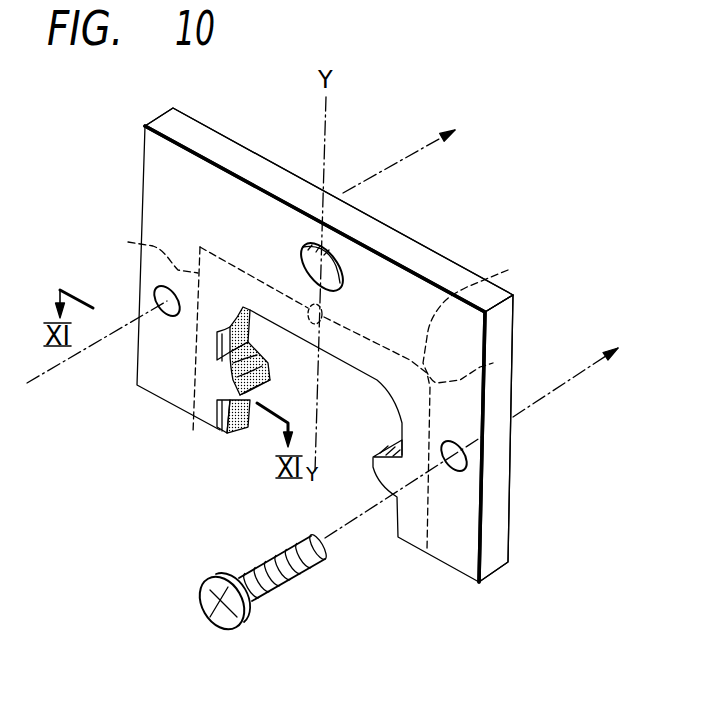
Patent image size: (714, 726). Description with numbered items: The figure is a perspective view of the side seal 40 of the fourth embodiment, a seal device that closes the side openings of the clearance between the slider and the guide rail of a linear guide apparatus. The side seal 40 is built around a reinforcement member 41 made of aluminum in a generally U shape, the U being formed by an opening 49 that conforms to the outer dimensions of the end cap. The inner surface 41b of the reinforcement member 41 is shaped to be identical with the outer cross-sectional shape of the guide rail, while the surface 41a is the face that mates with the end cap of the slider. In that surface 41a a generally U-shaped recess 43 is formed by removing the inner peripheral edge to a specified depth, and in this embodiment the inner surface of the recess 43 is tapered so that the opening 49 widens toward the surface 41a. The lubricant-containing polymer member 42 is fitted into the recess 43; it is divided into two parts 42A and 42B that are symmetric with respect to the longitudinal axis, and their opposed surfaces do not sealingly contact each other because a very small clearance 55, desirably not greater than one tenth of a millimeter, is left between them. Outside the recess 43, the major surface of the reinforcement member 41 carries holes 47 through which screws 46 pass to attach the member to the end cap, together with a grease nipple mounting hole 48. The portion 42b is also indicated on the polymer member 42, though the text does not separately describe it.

The side seal 40 is at (418, 222).
The reinforcement member 41 is at (428, 292).
The surface 41a is at (220, 132).
The inner surface 41b is at (188, 391).
The lubricant-containing polymer member 42 is at (231, 446).
The part 42A is at (140, 271).
The part 42B is at (487, 318).
The tab bend portion 42b is at (233, 380).
The recess 43 is at (493, 363).
The screw 46 is at (240, 620).
The hole 47 is at (470, 460).
The grease nipple mounting hole 48 is at (293, 233).
The opening 49 is at (345, 454).
The clearance 55 is at (323, 305).